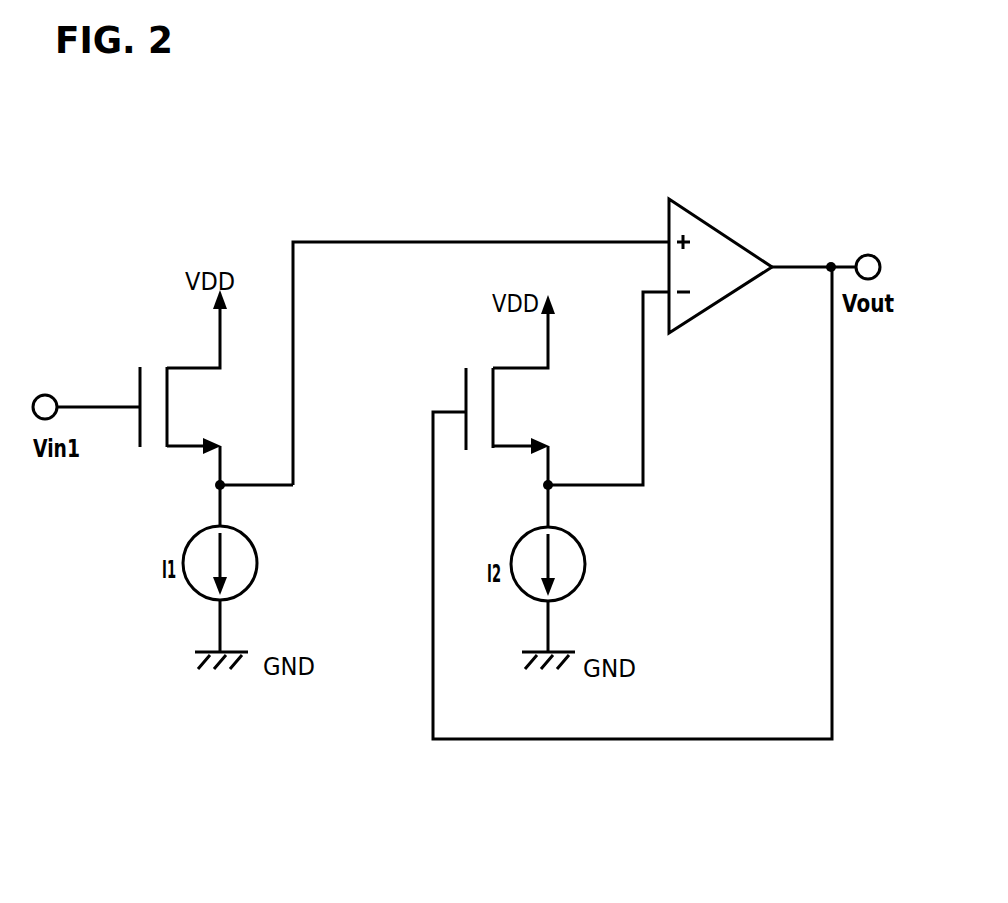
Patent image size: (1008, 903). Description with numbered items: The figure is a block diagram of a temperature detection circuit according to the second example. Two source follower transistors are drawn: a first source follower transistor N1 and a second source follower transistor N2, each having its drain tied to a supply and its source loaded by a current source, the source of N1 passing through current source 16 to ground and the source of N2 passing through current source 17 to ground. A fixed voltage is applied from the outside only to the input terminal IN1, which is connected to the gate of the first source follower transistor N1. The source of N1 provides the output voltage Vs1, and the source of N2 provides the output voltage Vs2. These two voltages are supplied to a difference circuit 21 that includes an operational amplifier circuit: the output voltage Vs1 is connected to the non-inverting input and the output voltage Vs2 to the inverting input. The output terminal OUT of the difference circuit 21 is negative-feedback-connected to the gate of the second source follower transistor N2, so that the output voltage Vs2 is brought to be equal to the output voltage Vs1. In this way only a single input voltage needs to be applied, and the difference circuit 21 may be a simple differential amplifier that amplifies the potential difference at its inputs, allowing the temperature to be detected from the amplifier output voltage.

The first current source 16 is at (258, 561).
The second current source 17 is at (586, 562).
The difference circuit 21 is at (707, 221).
The first source follower transistor N1 is at (208, 410).
The second source follower transistor N2 is at (540, 414).
The input terminal IN1 is at (51, 394).
The output terminal OUT is at (859, 257).
The output voltage Vs1 is at (222, 481).
The output voltage Vs2 is at (552, 483).